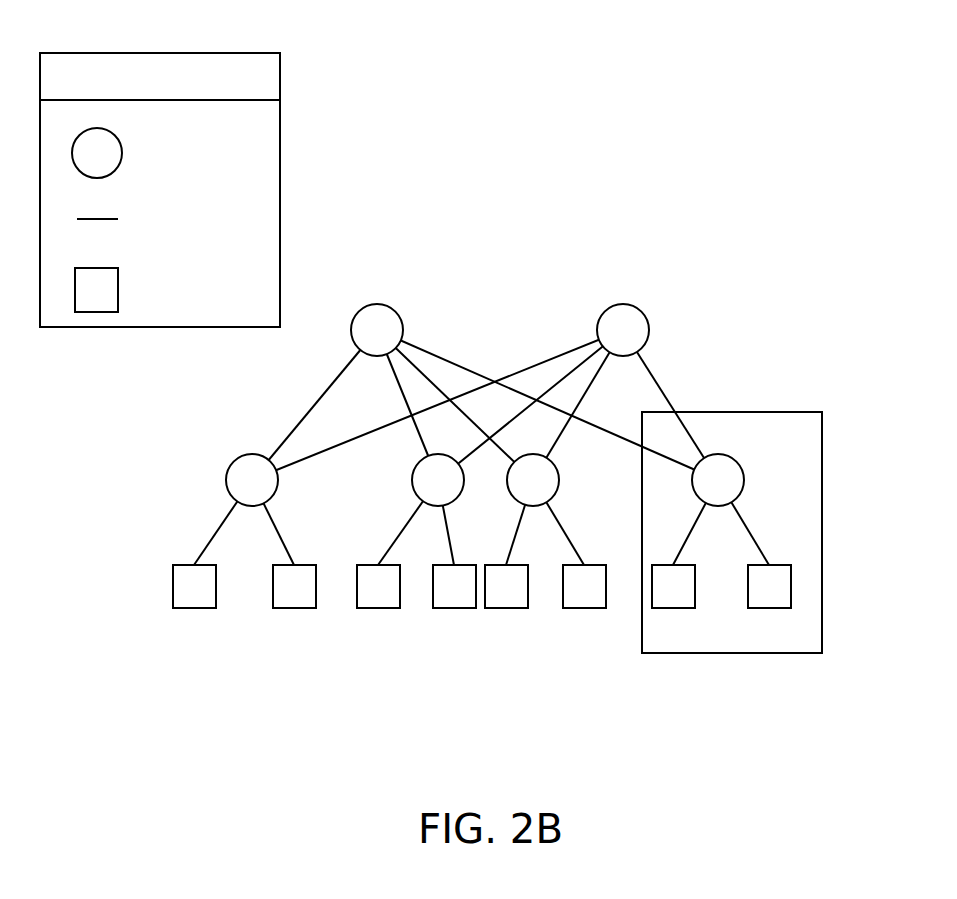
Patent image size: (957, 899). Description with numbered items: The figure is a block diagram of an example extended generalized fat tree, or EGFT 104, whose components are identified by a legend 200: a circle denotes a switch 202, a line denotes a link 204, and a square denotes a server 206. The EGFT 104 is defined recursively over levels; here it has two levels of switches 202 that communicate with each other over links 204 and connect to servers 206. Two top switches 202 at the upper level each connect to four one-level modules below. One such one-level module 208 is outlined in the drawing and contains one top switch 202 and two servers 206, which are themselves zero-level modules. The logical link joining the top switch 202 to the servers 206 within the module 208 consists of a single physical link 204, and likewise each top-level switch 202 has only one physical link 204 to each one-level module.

The legend 200 is at (118, 53).
The switch 202 is at (170, 153).
The link 204 is at (171, 220).
The server 206 is at (171, 290).
The EGFT 104 is at (457, 200).
The one-level module 208 is at (773, 411).